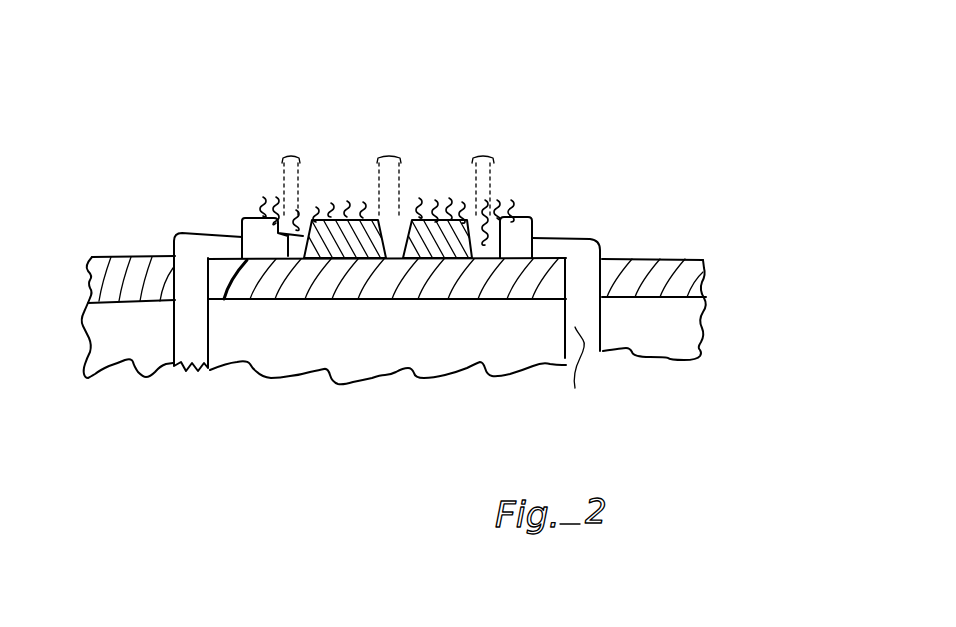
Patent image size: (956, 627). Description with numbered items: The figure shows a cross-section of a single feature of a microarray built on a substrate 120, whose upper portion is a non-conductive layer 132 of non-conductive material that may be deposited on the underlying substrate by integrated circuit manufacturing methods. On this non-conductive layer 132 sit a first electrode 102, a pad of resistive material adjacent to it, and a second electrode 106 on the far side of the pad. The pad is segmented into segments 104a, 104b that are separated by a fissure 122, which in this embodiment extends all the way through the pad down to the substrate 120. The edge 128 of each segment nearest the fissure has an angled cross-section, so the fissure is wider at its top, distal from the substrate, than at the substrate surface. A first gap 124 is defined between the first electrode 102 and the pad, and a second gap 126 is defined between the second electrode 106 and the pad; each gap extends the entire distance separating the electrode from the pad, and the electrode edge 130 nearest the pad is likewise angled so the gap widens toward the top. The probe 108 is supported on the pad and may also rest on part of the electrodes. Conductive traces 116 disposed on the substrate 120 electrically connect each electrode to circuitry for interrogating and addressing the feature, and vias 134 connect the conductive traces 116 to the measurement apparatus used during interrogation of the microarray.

The first electrode 102 is at (379, 153).
The segment of the pad 104a is at (377, 222).
The segment of the pad 104b is at (441, 218).
The second electrode 106 is at (520, 217).
The probe 108 is at (500, 200).
The conductive traces 116 is at (222, 249).
The substrate 120 is at (711, 257).
The fissure 122 is at (389, 150).
The first gap 124 is at (292, 157).
The second gap 126 is at (485, 153).
The edge of the segments 128 is at (331, 203).
The electrode edge 130 is at (245, 216).
The non-conductive layer 132 is at (667, 262).
The vias 134 is at (584, 381).